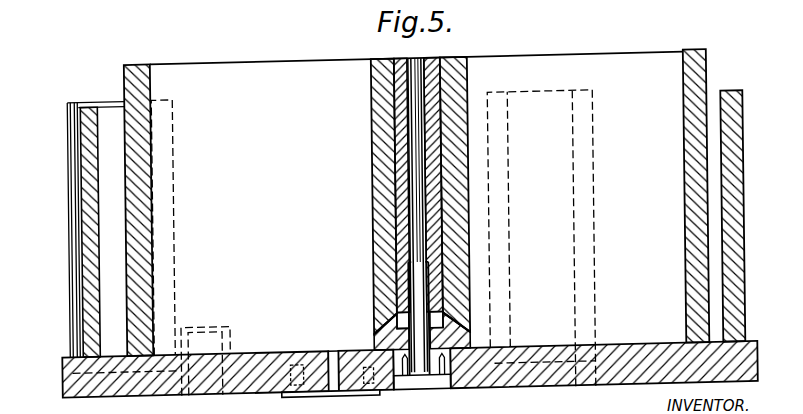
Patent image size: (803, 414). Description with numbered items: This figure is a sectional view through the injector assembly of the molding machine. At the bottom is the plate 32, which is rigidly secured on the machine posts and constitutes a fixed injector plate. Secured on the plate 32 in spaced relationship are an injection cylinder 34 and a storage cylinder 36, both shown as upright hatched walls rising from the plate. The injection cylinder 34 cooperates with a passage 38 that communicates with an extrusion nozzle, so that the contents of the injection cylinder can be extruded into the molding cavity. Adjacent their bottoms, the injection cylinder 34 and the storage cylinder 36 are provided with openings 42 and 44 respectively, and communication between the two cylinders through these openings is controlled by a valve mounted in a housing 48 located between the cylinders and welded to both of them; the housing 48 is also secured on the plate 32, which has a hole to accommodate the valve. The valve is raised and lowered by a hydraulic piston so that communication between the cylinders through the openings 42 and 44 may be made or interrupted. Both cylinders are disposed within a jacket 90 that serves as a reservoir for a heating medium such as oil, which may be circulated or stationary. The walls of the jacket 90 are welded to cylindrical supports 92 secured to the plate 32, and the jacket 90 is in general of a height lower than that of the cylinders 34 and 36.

The plate 32 is at (250, 390).
The injection cylinder 34 is at (126, 86).
The storage cylinder 36 is at (698, 68).
The passage 38 is at (330, 356).
The opening 42 is at (386, 328).
The opening 44 is at (464, 334).
The housing 48 is at (430, 66).
The jacket 90 is at (88, 166).
The cylindrical supports 92 is at (73, 206).